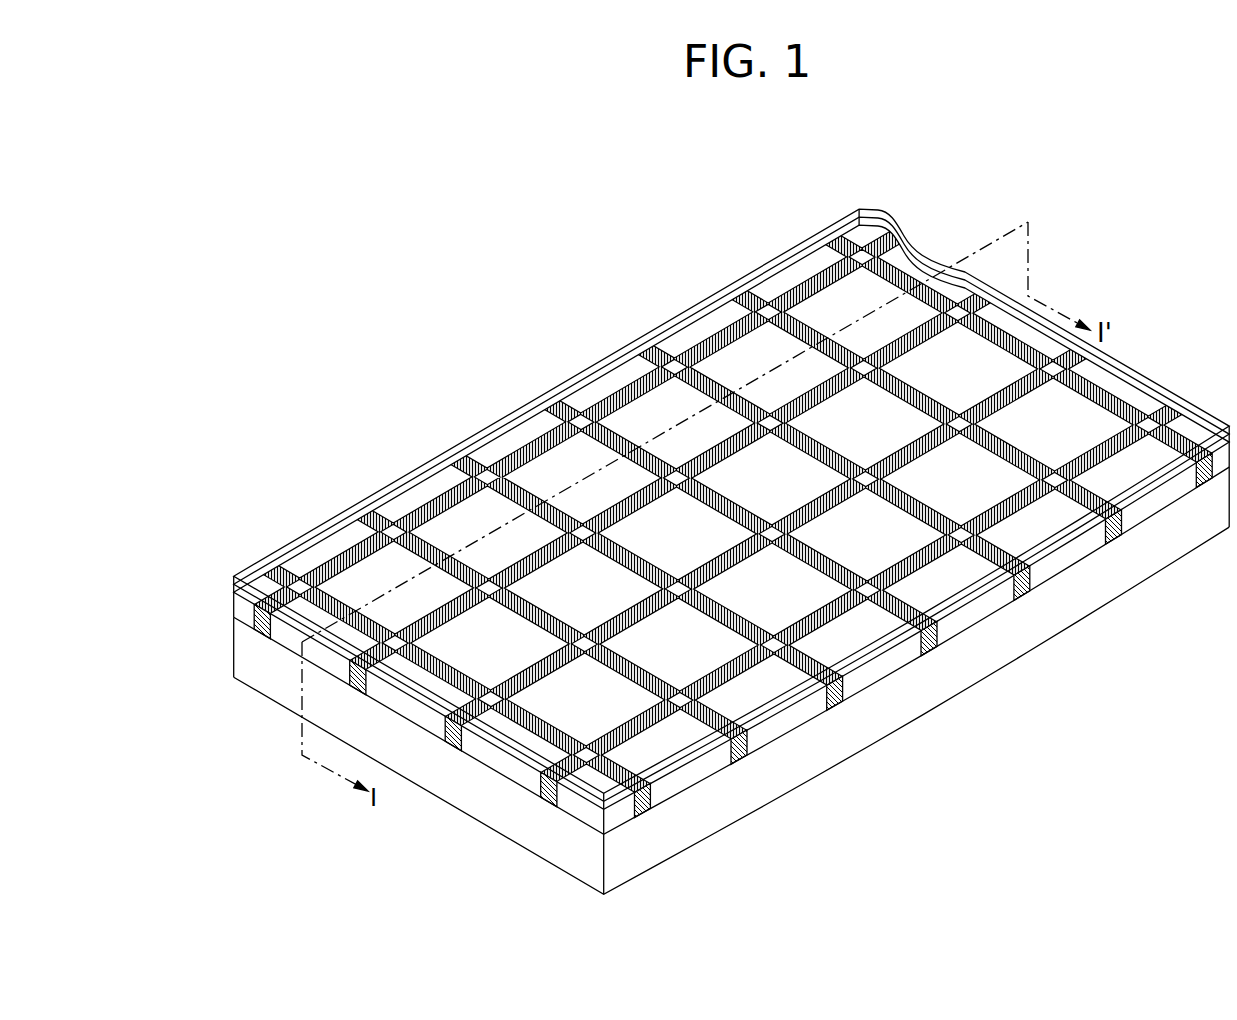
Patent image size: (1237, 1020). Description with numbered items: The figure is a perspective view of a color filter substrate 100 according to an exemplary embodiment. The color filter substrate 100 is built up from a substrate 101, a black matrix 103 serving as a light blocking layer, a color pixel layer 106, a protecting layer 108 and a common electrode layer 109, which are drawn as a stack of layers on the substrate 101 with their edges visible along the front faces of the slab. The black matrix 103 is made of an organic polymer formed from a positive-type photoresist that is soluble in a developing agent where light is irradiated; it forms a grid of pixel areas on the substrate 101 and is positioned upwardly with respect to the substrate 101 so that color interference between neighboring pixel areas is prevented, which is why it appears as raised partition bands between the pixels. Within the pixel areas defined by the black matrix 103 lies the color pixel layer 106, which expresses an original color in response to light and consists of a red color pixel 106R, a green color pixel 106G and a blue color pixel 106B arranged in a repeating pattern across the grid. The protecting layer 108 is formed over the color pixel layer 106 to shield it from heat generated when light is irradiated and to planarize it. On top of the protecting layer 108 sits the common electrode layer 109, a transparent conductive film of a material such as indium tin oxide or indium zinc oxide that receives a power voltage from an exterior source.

The color filter substrate 100 is at (611, 198).
The substrate 101 is at (238, 653).
The black matrix (light blocking layer) 103 is at (243, 622).
The color pixel layer 106 is at (514, 368).
The red color pixel 106R is at (372, 578).
The green color pixel 106G is at (466, 518).
The blue color pixel 106B is at (557, 468).
The protecting layer 108 is at (231, 593).
The common electrode layer 109 is at (232, 578).